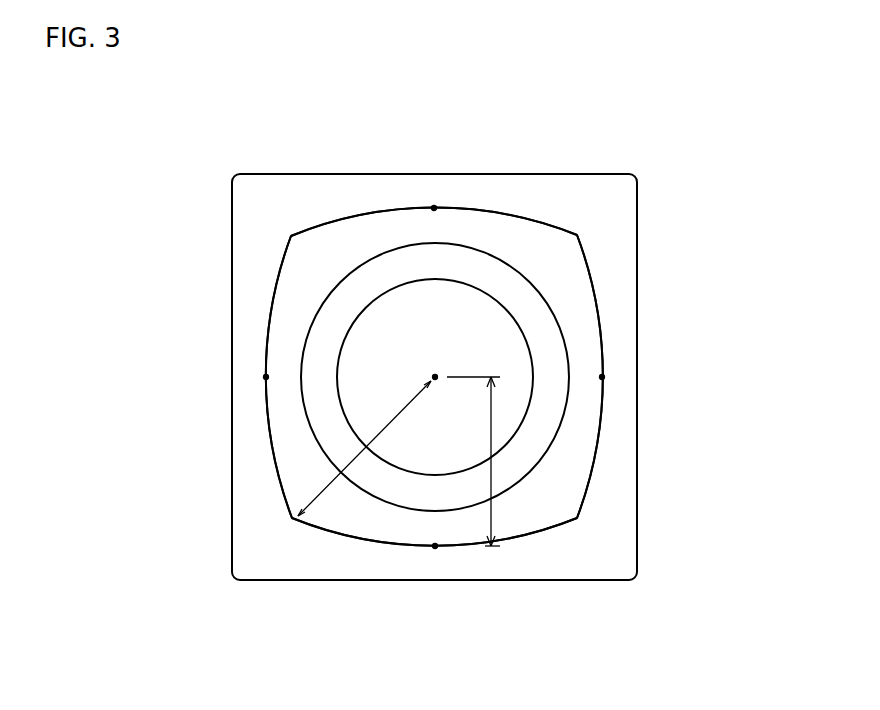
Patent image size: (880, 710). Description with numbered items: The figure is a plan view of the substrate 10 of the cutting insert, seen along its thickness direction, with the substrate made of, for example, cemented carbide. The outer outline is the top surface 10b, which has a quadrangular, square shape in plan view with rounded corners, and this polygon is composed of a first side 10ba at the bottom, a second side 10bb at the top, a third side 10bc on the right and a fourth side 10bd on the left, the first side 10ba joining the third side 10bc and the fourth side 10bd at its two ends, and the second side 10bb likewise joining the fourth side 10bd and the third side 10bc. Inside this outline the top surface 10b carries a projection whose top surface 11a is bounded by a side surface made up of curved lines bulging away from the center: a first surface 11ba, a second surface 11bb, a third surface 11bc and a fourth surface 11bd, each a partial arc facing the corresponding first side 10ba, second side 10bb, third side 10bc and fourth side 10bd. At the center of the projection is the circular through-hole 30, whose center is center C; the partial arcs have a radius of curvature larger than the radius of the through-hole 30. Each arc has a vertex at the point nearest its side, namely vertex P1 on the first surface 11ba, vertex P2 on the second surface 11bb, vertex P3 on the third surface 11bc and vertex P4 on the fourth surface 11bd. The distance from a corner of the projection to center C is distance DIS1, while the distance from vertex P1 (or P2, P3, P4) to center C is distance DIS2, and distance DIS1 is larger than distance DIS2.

The substrate 10 is at (711, 138).
The top surface 10b is at (620, 355).
The first side 10ba is at (582, 582).
The second side 10bb is at (537, 174).
The third side 10bc is at (640, 282).
The fourth side 10bd is at (232, 322).
The top surface of projection 11a is at (477, 222).
The first surface 11ba is at (386, 547).
The second surface 11bb is at (343, 218).
The third surface 11bc is at (598, 469).
The fourth surface 11bd is at (270, 444).
The through-hole 30 is at (320, 307).
The center C is at (434, 374).
The vertex P1 is at (436, 548).
The vertex P2 is at (434, 206).
The vertex P3 is at (603, 378).
The vertex P4 is at (265, 377).
The distance DIS1 is at (337, 498).
The distance DIS2 is at (497, 508).